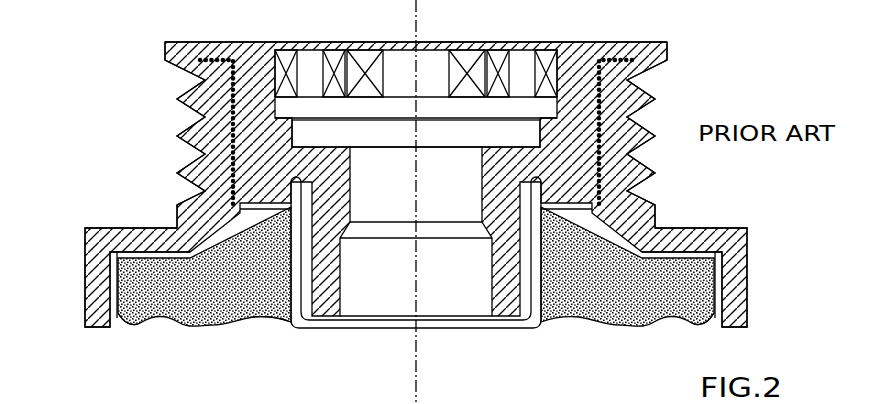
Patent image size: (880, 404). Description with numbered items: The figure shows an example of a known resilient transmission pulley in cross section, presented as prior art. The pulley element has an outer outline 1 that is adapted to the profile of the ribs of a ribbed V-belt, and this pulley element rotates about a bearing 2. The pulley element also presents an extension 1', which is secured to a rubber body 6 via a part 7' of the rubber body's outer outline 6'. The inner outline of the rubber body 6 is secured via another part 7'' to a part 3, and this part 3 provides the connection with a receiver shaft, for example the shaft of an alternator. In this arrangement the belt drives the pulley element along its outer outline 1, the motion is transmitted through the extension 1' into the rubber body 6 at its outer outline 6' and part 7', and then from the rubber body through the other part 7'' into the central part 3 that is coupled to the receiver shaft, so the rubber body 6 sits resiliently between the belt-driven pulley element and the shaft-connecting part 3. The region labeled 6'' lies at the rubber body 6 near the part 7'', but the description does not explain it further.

The outer outline 1 is at (387, 114).
The extension 1' is at (399, 252).
The bearing 2 is at (232, 66).
The part 3 is at (262, 50).
The rubber body 6 is at (416, 296).
The outer outline of rubber body 6' is at (410, 346).
The inner end of rubber filling 6'' is at (272, 346).
The part of outer outline 7' is at (361, 285).
The another part 7'' is at (416, 280).